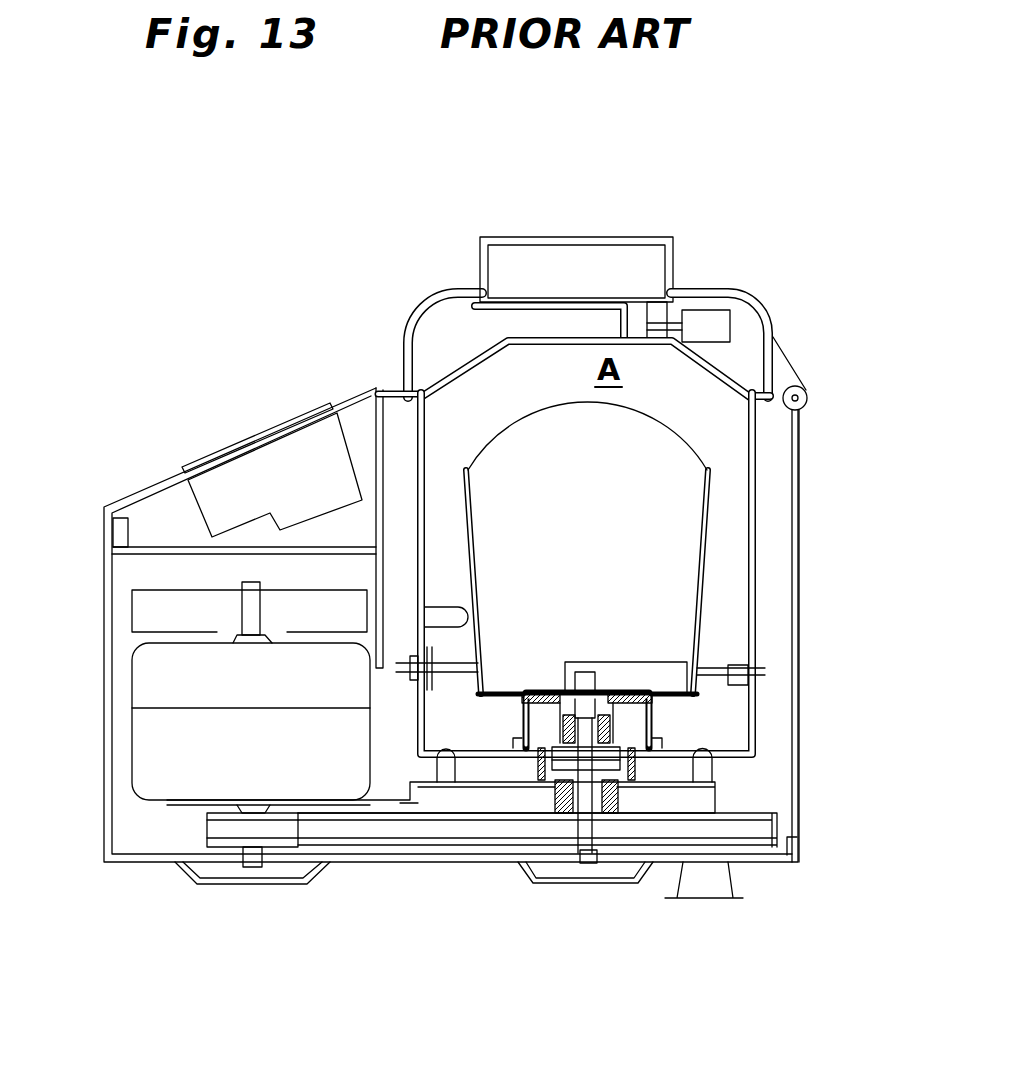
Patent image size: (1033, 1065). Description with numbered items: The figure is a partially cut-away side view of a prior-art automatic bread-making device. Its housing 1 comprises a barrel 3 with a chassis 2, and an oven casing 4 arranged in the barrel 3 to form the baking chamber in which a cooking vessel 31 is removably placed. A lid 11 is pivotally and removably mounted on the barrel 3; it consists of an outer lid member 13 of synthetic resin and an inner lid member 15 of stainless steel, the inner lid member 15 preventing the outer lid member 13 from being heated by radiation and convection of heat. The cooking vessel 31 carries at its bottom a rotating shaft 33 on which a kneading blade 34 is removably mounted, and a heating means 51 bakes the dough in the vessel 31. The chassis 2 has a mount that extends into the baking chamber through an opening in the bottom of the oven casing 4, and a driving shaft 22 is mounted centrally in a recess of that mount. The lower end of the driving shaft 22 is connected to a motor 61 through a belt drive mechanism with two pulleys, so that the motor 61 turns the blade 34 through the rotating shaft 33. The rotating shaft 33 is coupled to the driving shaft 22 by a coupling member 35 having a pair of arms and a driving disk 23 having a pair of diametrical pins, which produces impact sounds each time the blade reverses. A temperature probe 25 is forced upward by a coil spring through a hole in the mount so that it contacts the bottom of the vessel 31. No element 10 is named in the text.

The housing 1 is at (155, 457).
The chassis 2 is at (375, 803).
The barrel 3 is at (103, 610).
The oven casing 4 is at (753, 433).
The detergent dispenser 10 is at (252, 480).
The lid 11 is at (770, 313).
The outer lid member 13 is at (457, 287).
The inner lid member 15 is at (450, 367).
The driving shaft 22 is at (587, 865).
The driving disk 23 is at (568, 770).
The temperature probe 25 is at (450, 613).
The cooking vessel 31 is at (708, 558).
The rotating shaft 33 is at (582, 687).
The kneading blade 34 is at (662, 675).
The coupling member 35 is at (617, 747).
The heating means 51 is at (765, 673).
The motor 61 is at (155, 745).